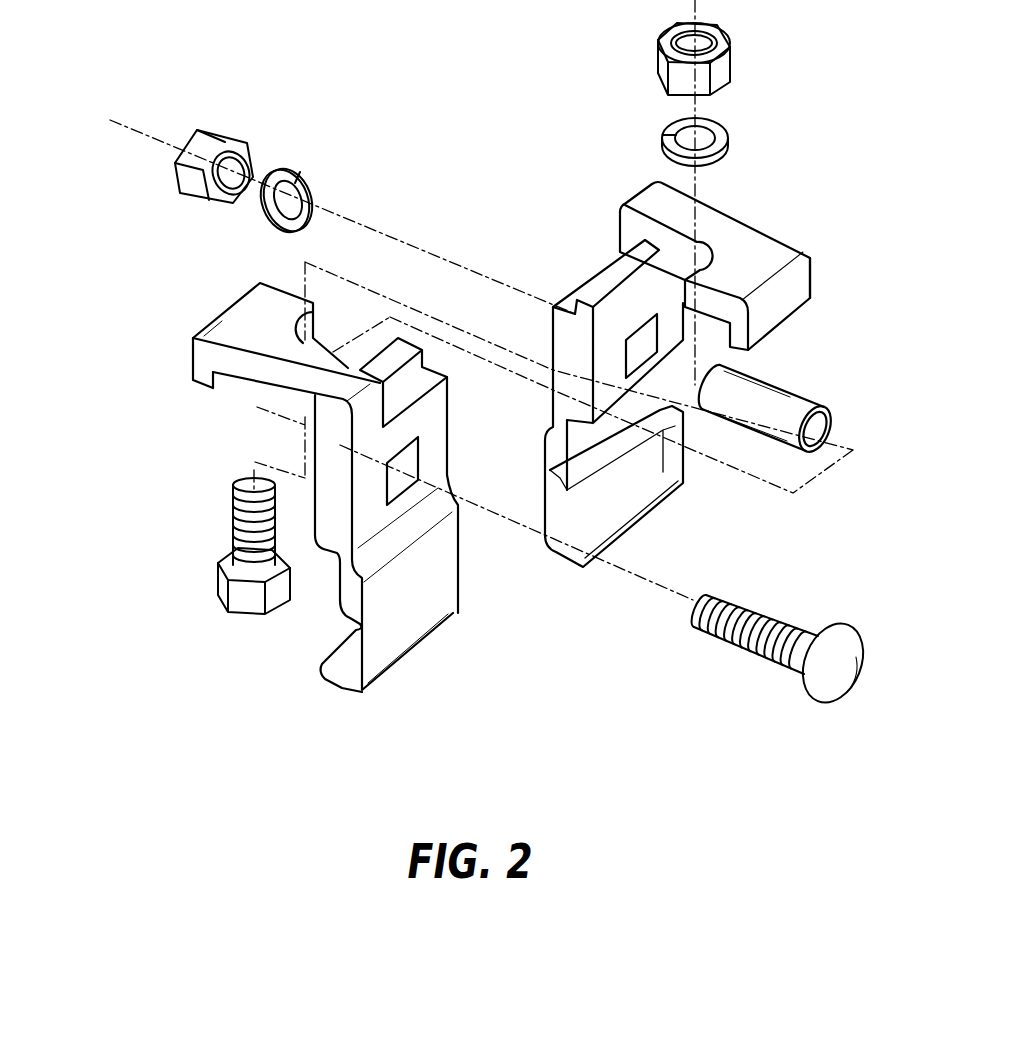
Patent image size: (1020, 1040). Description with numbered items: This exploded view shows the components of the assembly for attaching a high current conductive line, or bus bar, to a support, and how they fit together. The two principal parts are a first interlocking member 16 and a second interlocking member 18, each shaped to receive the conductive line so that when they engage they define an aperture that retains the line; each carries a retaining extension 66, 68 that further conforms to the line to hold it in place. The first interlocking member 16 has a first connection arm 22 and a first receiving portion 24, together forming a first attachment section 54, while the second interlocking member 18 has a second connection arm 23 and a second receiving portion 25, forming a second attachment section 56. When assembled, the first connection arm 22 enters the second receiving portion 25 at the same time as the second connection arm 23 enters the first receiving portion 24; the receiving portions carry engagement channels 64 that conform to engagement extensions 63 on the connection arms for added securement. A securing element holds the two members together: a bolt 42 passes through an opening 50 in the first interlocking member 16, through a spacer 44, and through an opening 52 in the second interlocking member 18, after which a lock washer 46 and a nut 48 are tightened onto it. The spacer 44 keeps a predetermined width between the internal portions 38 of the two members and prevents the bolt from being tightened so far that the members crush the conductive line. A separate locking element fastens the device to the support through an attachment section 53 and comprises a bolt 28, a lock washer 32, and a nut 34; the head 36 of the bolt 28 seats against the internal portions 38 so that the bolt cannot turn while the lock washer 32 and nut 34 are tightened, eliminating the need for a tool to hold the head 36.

The first interlocking member 16 is at (640, 198).
The second interlocking member 18 is at (450, 615).
The first connection arm 22 is at (792, 213).
The second connection arm 23 is at (230, 387).
The first receiving portion 24 is at (573, 262).
The second receiving portion 25 is at (400, 338).
The bolt 28 is at (197, 583).
The lock washer 32 is at (727, 143).
The nut 34 is at (732, 57).
The head 36 is at (243, 617).
The internal portions 38 is at (307, 500).
The bolt 42 is at (828, 688).
The spacer 44 is at (822, 402).
The lock washer 46 is at (277, 230).
The nut 48 is at (219, 133).
The opening 50 is at (640, 328).
The opening 52 is at (405, 485).
The attachment section 53 is at (346, 270).
The first attachment section 54 is at (632, 142).
The second attachment section 56 is at (240, 407).
The engagement extensions 63 is at (190, 377).
The engagement channels 64 is at (550, 317).
The retaining extension 66 is at (620, 542).
The retaining extension 68 is at (663, 417).